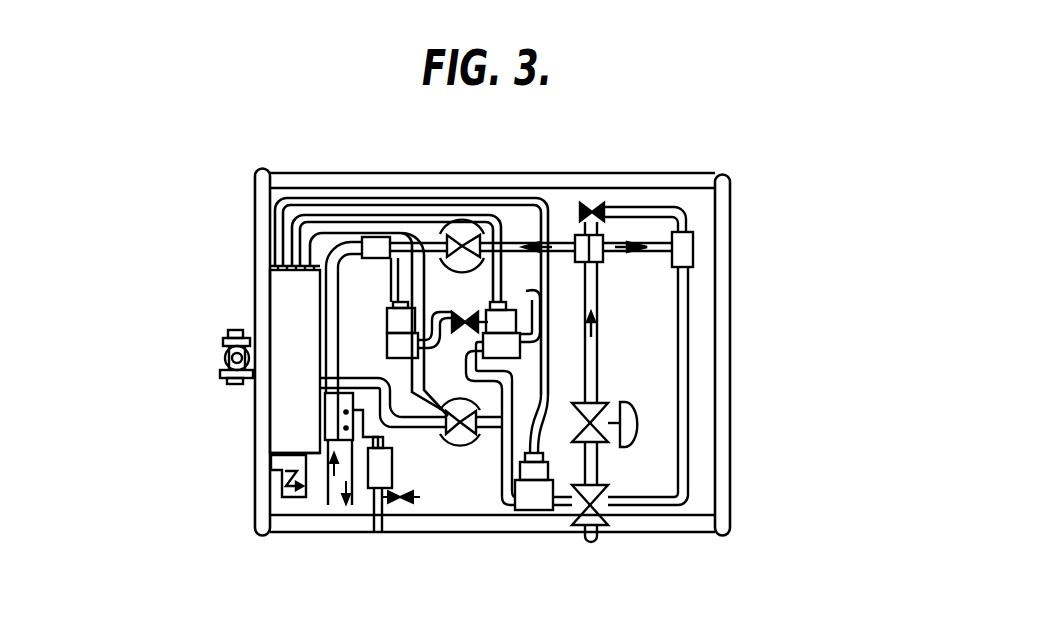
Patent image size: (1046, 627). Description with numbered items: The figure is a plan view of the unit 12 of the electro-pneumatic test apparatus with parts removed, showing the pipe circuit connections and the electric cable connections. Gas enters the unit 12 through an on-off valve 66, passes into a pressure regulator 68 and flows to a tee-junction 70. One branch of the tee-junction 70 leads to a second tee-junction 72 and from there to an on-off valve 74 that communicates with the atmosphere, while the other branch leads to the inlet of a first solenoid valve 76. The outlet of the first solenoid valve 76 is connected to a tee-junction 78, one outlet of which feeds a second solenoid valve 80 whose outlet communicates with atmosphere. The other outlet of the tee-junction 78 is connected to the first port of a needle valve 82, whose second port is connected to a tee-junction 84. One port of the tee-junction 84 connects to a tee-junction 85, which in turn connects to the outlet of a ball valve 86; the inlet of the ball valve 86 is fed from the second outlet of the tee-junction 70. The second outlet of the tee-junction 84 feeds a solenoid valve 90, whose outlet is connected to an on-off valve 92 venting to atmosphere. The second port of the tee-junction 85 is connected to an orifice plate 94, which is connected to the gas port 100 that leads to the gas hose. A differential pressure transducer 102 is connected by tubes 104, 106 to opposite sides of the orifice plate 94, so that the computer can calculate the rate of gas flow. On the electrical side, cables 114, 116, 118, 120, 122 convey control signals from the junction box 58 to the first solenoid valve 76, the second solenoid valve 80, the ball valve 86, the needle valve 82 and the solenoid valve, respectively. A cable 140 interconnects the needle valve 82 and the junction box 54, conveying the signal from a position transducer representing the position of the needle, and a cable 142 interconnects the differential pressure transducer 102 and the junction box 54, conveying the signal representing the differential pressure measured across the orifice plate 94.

The unit 12 is at (735, 164).
The junction box 54 is at (276, 427).
The junction box 58 is at (277, 280).
The on-off valve 66 is at (607, 503).
The pressure regulator 68 is at (638, 420).
The tee-junction 70 is at (606, 207).
The second tee-junction 72 is at (693, 240).
The on-off valve 74 is at (600, 236).
The first solenoid valve 76 is at (541, 500).
The tee-junction 78 is at (505, 420).
The second solenoid valve 80 is at (522, 355).
The needle valve 82 is at (470, 442).
The tee-junction 84 is at (340, 348).
The tee-junction 85 is at (375, 237).
The ball valve 86 is at (463, 221).
The solenoid valve 90 is at (446, 442).
The on-off valve 92 is at (467, 308).
The orifice plate 94 is at (272, 456).
The gas port 100 is at (288, 497).
The differential pressure transducer 102 is at (383, 500).
The tube 104 is at (340, 512).
The tube 106 is at (372, 515).
The cable 114 is at (543, 302).
The cable 116 is at (548, 262).
The cable 118 is at (276, 210).
The cable 120 is at (390, 293).
The cable 122 is at (395, 268).
The cable 140 is at (324, 393).
The cable 142 is at (324, 401).